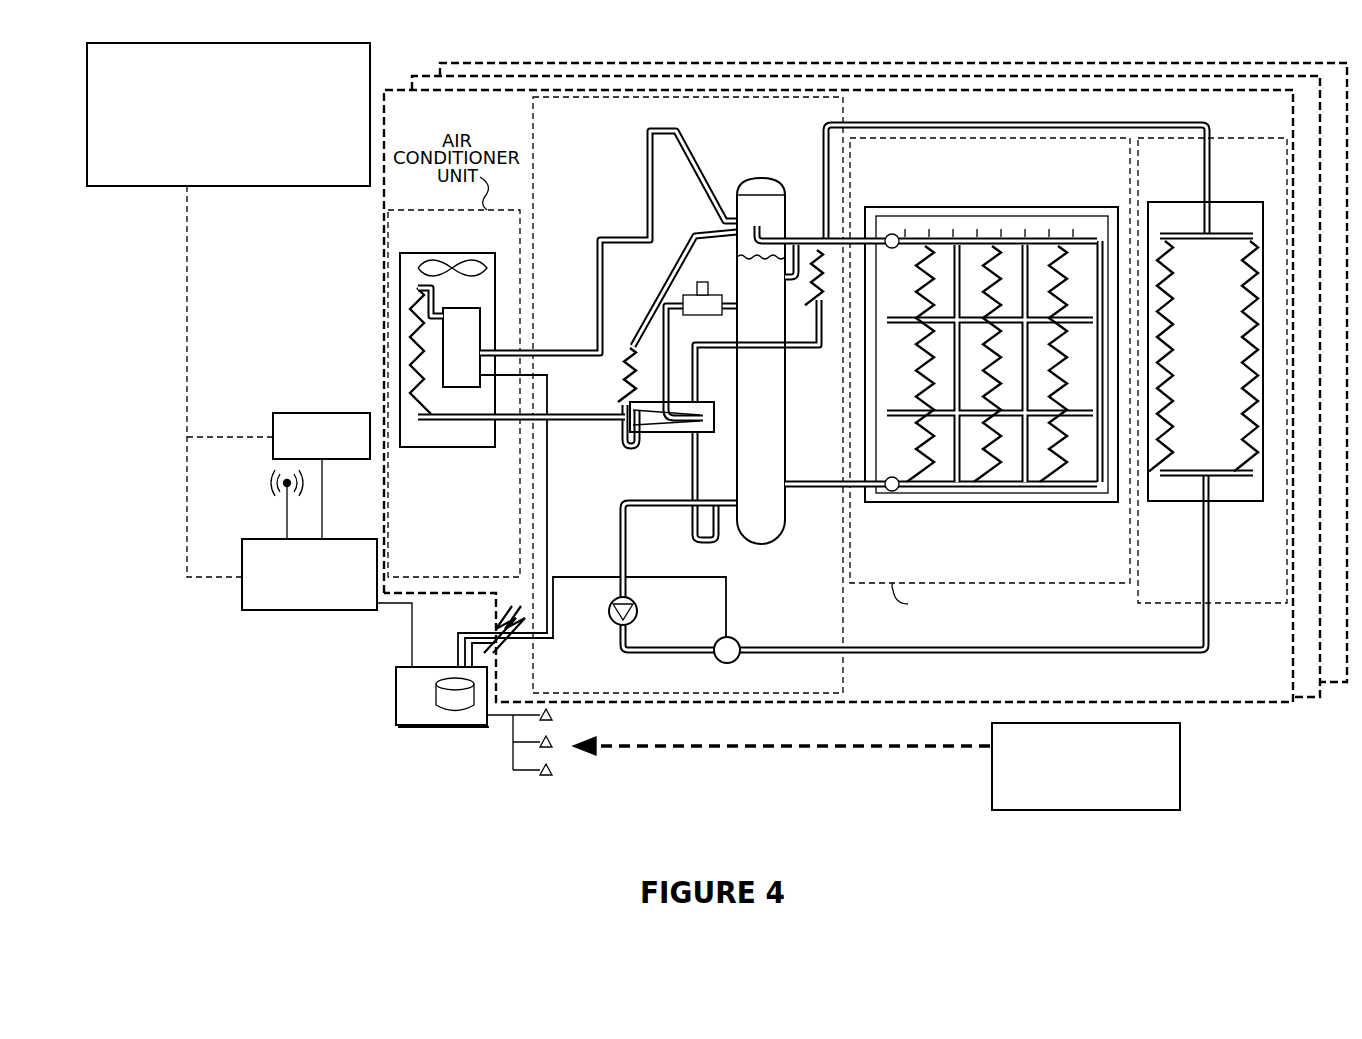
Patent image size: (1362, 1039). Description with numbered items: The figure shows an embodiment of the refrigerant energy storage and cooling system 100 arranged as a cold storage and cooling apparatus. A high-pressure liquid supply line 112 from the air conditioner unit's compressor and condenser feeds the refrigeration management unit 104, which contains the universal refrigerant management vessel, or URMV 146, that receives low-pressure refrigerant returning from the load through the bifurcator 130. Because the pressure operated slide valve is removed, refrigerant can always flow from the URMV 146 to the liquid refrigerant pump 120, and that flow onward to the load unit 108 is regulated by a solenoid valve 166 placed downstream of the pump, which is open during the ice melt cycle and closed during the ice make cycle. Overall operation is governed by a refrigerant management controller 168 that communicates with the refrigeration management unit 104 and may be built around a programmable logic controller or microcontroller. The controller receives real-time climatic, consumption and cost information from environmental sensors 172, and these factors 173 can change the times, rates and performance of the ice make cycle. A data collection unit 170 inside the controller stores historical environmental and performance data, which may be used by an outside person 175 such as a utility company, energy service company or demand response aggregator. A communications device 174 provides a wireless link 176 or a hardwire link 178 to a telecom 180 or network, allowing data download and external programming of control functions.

The refrigerant energy storage and cooling system 100 is at (1347, 683).
The refrigeration management unit 104 is at (845, 659).
The load unit 108 is at (1262, 605).
The high-pressure liquid supply line 112 is at (512, 420).
The liquid refrigerant pump 120 is at (612, 601).
The bifurcator 130 is at (812, 246).
The universal refrigerant management vessel (URMV) 146 is at (763, 181).
The solenoid valve 166 is at (735, 638).
The refrigerant management controller 168 is at (397, 722).
The data collection unit 170 is at (441, 709).
The environmental sensors 172 is at (558, 716).
The factors 173 is at (992, 776).
The communications device 174 is at (343, 610).
The outside person 175 is at (373, 55).
The wireless link 176 is at (270, 470).
The hardwire link 178 is at (326, 500).
The telecom 180 is at (273, 413).